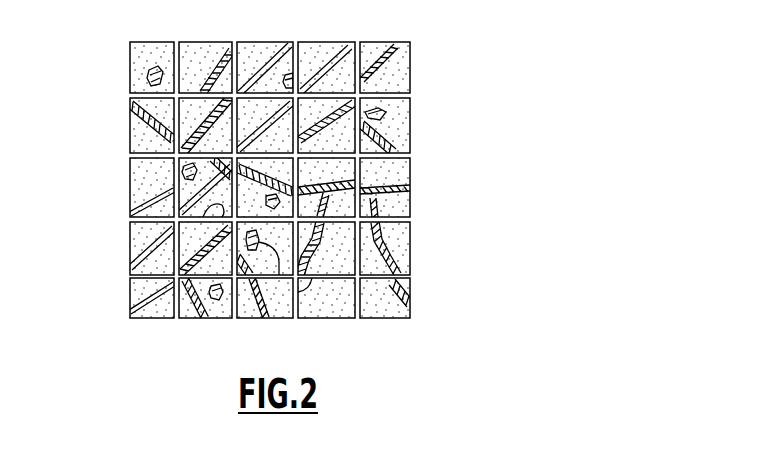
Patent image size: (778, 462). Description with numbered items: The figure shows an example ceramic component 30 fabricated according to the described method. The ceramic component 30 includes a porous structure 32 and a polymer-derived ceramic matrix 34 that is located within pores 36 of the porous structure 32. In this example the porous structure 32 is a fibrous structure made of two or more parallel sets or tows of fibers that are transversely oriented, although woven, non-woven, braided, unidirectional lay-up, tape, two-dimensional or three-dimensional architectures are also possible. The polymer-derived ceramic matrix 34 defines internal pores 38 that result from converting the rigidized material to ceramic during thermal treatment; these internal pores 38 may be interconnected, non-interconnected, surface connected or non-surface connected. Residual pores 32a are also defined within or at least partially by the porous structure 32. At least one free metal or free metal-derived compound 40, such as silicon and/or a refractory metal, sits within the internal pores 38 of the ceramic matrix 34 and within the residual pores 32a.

The ceramic component 30 is at (259, 202).
The porous structure 32 is at (284, 202).
The residual pores 32a is at (277, 262).
The polymer-derived ceramic matrix 34 is at (387, 173).
The pores 36 is at (397, 125).
The internal pores 38 is at (195, 291).
The free metal or free metal-derived compound 40 is at (182, 172).